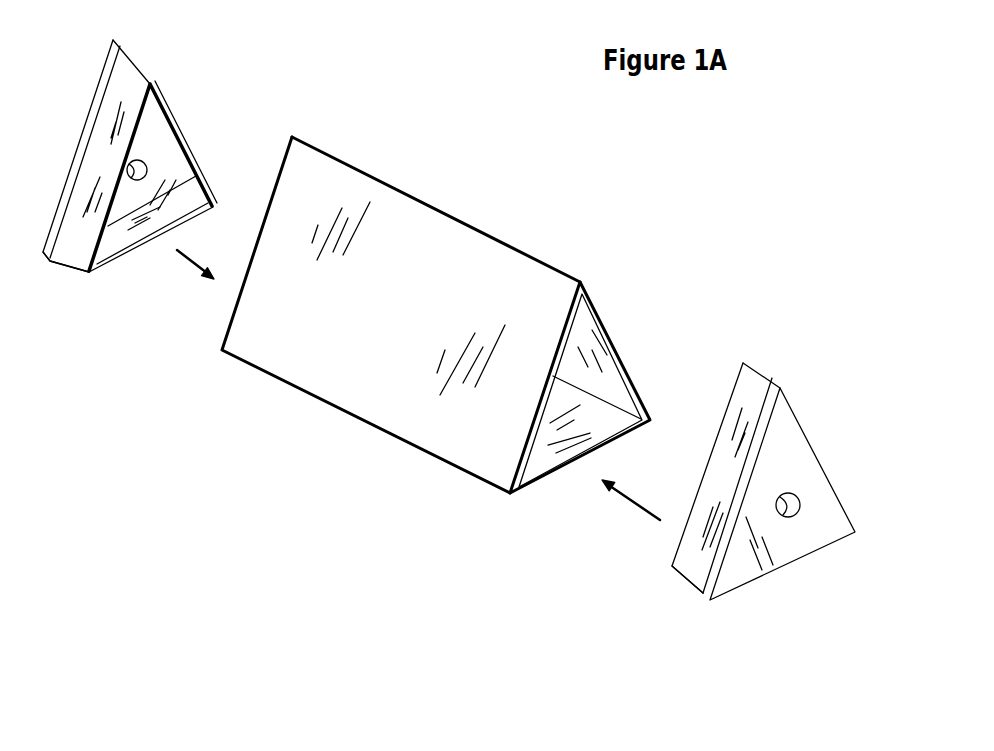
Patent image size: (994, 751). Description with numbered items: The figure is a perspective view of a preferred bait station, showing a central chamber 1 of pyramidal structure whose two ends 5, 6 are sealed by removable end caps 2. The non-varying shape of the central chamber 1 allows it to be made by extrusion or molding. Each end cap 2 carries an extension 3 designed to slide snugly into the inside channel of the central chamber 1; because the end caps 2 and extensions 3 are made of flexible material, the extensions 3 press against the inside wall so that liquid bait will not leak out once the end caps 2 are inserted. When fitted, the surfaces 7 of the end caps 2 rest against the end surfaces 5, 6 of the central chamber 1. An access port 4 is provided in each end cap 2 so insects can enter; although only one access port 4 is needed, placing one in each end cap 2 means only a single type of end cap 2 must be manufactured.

The central chamber 1 is at (414, 315).
The end cap 2 is at (80, 147).
The extension 3 is at (127, 64).
The access port 4 is at (130, 160).
The end surface 5 is at (230, 323).
The end surface 6 is at (635, 372).
The surface 7 is at (60, 256).